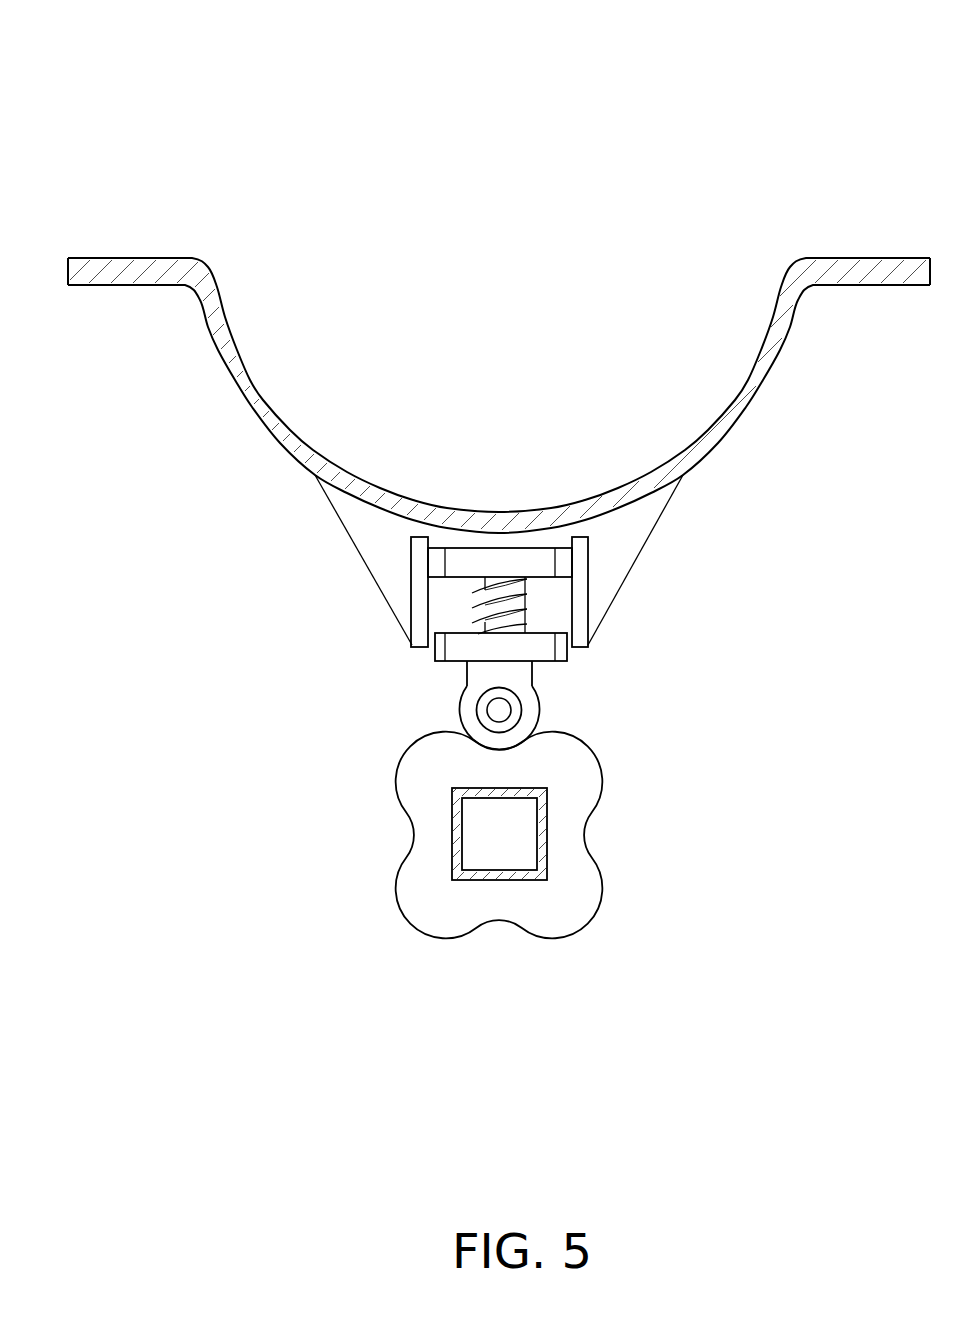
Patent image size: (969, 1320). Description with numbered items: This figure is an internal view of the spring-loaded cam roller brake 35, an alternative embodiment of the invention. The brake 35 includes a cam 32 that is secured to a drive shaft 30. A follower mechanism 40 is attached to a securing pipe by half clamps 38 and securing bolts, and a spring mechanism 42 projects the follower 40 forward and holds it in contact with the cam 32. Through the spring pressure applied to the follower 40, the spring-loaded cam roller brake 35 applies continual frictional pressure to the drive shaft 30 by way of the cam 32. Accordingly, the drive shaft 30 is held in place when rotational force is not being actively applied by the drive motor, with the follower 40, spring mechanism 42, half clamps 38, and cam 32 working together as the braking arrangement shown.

The drive shaft 30 is at (513, 827).
The cam 32 is at (562, 912).
The spring-loaded cam roller brake 35 is at (593, 177).
The half clamps 38 is at (258, 407).
The follower mechanism 40 is at (500, 750).
The spring mechanism 42 is at (505, 617).